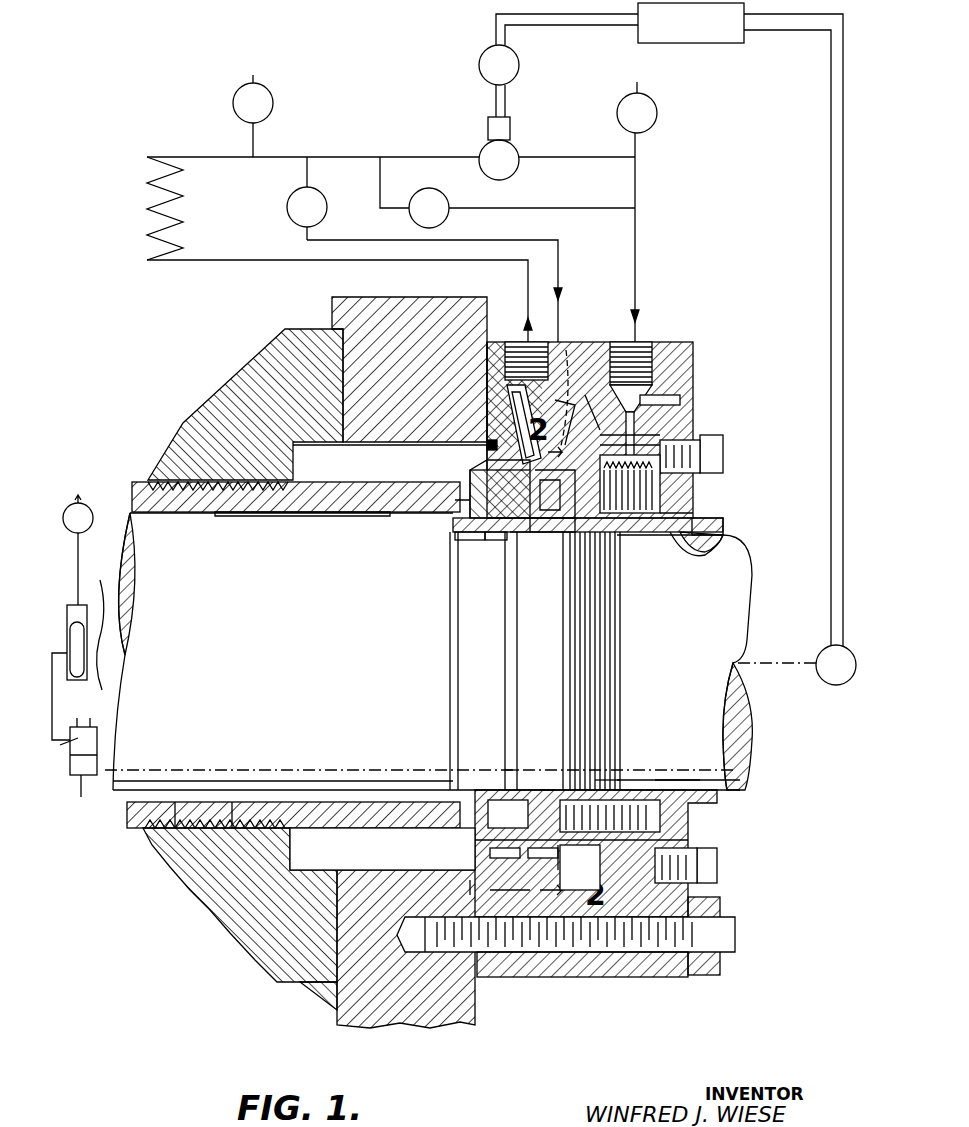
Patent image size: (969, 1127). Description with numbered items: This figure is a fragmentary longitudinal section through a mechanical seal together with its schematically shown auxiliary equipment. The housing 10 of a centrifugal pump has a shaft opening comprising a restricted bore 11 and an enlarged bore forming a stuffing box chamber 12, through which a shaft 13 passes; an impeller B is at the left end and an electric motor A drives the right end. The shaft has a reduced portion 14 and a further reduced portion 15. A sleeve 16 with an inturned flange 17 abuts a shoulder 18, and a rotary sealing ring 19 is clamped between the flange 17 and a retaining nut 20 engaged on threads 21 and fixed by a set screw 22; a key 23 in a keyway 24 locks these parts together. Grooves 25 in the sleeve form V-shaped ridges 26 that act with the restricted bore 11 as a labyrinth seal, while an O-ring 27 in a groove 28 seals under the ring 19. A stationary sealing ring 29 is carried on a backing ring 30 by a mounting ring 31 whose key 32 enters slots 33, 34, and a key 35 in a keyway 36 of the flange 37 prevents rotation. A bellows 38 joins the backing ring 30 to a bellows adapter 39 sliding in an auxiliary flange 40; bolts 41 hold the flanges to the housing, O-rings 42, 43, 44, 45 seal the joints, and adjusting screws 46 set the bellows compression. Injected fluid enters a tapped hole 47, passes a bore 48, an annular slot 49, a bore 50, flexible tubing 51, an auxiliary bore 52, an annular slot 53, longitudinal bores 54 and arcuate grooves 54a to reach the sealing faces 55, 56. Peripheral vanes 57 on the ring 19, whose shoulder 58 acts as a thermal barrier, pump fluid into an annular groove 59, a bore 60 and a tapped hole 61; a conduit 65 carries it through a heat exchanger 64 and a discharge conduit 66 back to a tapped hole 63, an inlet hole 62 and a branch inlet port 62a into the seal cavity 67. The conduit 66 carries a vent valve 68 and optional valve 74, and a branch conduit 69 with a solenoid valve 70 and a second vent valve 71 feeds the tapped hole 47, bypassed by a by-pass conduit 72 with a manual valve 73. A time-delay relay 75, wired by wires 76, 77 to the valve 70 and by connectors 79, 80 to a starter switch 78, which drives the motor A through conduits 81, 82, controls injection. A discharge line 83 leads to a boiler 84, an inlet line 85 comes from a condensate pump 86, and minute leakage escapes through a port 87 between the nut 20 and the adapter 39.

The housing 10 is at (262, 372).
The restricted bore 11 is at (168, 480).
The stuffing box chamber 12 is at (330, 447).
The shaft 13 is at (127, 818).
The reduced portion 14 is at (470, 677).
The further reduced portion 15 is at (745, 588).
The sleeve 16 is at (183, 802).
The inturned flange 17 is at (450, 797).
The shoulder 18 is at (452, 523).
The rotary sealing ring 19 is at (482, 792).
The retaining nut 20 is at (666, 792).
The threads 21 is at (606, 667).
The set screw 22 is at (715, 552).
The key 23 is at (470, 540).
The keyway 24 is at (492, 545).
The circumferential grooves 25 is at (232, 802).
The V-shaped ridges 26 is at (158, 852).
The O-ring 27 is at (508, 814).
The groove 28 is at (516, 772).
The stationary sealing ring 29 is at (548, 792).
The backing ring 30 is at (600, 788).
The mounting ring 31 is at (511, 888).
The key 32 is at (545, 864).
The slot 33 is at (507, 864).
The slot 34 is at (575, 863).
The key 35 is at (575, 418).
The keyway 36 is at (598, 414).
The flange 37 is at (487, 378).
The bellows 38 is at (690, 816).
The bellows adapter 39 is at (693, 506).
The auxiliary flange 40 is at (693, 368).
The bolts 41 is at (626, 977).
The O-ring 42 is at (471, 890).
The O-ring 43 is at (599, 878).
The O-ring 44 is at (610, 832).
The O-ring 45 is at (700, 882).
The adjusting screws 46 is at (723, 448).
The tapped hole 47 is at (655, 345).
The bore 48 is at (662, 400).
The annular slot 49 is at (640, 418).
The bore 50 is at (700, 484).
The flexible tubing 51 is at (672, 492).
The auxiliary bore 52 is at (552, 532).
The annular slot 53 is at (548, 540).
The longitudinal bores 54 is at (540, 540).
The arcuate groove 54a is at (470, 846).
The sealing face 55 is at (520, 540).
The sealing face 56 is at (500, 494).
The peripheral vanes 57 is at (468, 470).
The shoulder 58 is at (480, 462).
The annular groove 59 is at (488, 444).
The bore 60 is at (500, 400).
The tapped hole 61 is at (512, 342).
The inlet hole 62 is at (508, 424).
The branch inlet port 62a is at (588, 360).
The tapped hole 63 is at (566, 350).
The heat exchanger 64 is at (147, 242).
The conduit 65 is at (300, 261).
The discharge conduit 66 is at (288, 157).
The seal cavity 67 is at (690, 838).
The vent valve 68 is at (274, 104).
The branch conduit 69 is at (452, 157).
The solenoid valve 70 is at (515, 152).
The second vent valve 71 is at (657, 113).
The by-pass conduit 72 is at (512, 207).
The valve 73 is at (450, 207).
The valve 74 is at (287, 208).
The relay 75 is at (520, 66).
The electrical wire 76 is at (510, 112).
The electrical wire 77 is at (493, 103).
The starter switch 78 is at (726, 43).
The electrical connector 79 is at (496, 27).
The electrical connector 80 is at (508, 38).
The electrical conduit 81 is at (831, 128).
The electrical conduit 82 is at (843, 98).
The discharge line 83 is at (77, 572).
The boiler 84 is at (75, 503).
The inlet line 85 is at (52, 653).
The condensate pump 86 is at (70, 762).
The port 87 is at (685, 535).
The electric motor A is at (829, 686).